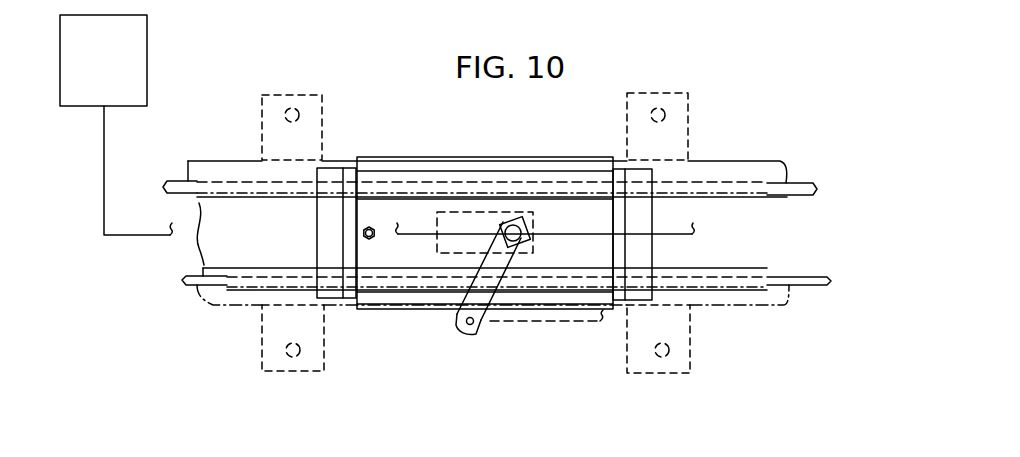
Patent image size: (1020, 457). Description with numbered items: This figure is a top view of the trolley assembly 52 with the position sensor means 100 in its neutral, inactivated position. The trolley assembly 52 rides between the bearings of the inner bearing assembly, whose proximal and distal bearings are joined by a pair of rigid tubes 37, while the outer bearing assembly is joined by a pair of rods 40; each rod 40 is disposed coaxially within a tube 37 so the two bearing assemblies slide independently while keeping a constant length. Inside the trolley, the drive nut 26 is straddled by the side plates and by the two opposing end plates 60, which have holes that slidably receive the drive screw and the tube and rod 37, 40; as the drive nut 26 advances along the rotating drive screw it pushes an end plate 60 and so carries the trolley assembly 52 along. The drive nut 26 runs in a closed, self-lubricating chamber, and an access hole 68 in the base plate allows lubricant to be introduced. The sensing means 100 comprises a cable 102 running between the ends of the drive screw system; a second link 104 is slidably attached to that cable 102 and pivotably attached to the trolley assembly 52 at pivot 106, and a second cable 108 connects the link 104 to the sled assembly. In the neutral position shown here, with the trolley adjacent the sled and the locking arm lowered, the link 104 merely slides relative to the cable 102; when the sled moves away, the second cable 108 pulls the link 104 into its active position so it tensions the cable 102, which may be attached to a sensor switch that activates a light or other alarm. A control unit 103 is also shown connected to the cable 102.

The drive nut 26 is at (468, 207).
The rigid tubes 37 is at (238, 181).
The rods 40 is at (168, 180).
The trolley assembly 52 is at (563, 142).
The end plates 60 is at (356, 303).
The access hole 68 is at (369, 226).
The position sensor means 100 is at (484, 256).
The cable 102 is at (121, 236).
The control unit 103 is at (147, 55).
The second link 104 is at (470, 327).
The pivot 106 is at (513, 212).
The second cable 108 is at (517, 324).